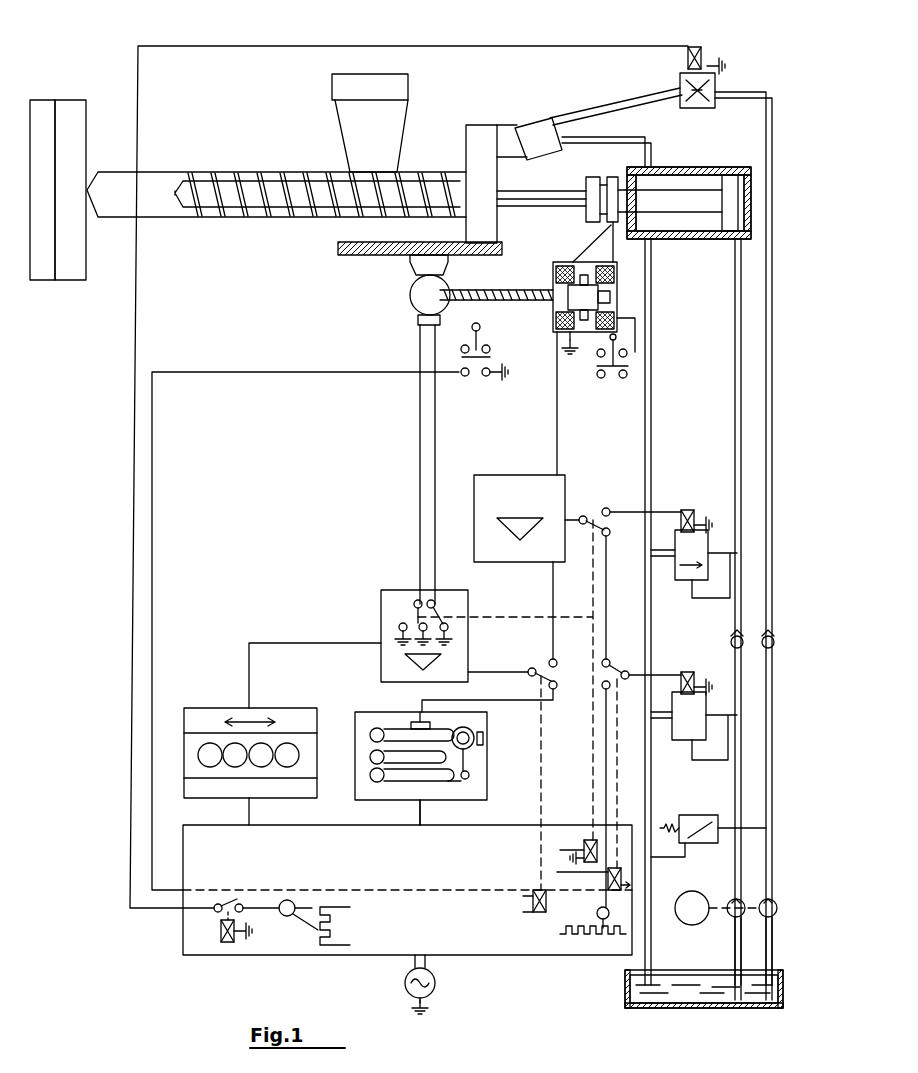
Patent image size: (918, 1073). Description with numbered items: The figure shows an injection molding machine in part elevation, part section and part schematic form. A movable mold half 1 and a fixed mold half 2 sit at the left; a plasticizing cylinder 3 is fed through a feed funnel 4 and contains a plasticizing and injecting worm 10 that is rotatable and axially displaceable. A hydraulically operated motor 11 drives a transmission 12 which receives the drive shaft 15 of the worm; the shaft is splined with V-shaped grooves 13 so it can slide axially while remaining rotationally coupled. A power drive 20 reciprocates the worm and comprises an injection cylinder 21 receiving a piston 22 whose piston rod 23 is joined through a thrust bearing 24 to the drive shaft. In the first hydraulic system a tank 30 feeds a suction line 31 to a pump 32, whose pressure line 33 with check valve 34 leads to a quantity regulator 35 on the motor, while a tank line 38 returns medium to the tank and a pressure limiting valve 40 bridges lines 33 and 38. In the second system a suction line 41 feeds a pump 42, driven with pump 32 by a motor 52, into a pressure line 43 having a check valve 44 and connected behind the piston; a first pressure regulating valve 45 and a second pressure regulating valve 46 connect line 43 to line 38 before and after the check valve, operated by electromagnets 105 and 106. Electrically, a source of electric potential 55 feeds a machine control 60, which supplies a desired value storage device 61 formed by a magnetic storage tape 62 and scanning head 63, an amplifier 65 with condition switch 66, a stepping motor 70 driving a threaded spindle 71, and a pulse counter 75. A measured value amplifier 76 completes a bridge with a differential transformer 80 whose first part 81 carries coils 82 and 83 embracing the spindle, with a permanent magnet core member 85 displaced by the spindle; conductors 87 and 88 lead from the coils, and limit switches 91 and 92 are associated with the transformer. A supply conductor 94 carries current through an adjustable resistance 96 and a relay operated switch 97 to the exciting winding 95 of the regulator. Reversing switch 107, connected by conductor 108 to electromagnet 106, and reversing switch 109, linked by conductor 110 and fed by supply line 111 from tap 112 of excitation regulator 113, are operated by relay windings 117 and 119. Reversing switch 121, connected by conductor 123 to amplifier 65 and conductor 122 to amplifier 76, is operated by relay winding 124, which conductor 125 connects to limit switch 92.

The movable mold half 1 is at (46, 100).
The fixed mold half 2 is at (78, 100).
The plasticizing cylinder 3 is at (160, 172).
The feed funnel 4 is at (332, 90).
The plasticizing and injecting worm 10 is at (248, 182).
The hydraulically operated motor 11 is at (536, 128).
The transmission 12 is at (472, 128).
The V-shaped grooves 13 is at (540, 191).
The drive shaft 15 is at (540, 206).
The power drive 20 is at (688, 210).
The injection cylinder 21 is at (684, 239).
The piston 22 is at (728, 231).
The piston rod 23 is at (700, 190).
The thrust bearing 24 is at (610, 176).
The tank 30 is at (624, 990).
The suction line 31 is at (764, 960).
The pump 32 is at (766, 898).
The pressure line 33 is at (766, 812).
The check valve 34 is at (762, 640).
The quantity regulator 35 is at (712, 105).
The tank line 38 is at (652, 385).
The pressure limiting valve 40 is at (689, 810).
The suction line 41 is at (732, 930).
The pump 42 is at (730, 898).
The pressure line 43 is at (735, 770).
The check valve 44 is at (731, 640).
The first electrohydraulic pressure regulating valve 45 is at (670, 738).
The second electrohydraulic pressure regulating valve 46 is at (674, 582).
The motor 52 is at (680, 896).
The source of electric potential 55 is at (446, 989).
The machine control 60 is at (370, 895).
The desired value storage device 61 is at (481, 803).
The magnetic storage tape 62 is at (474, 760).
The scanning head 63 is at (434, 753).
The amplifier 65 is at (358, 634).
The condition switch 66 is at (398, 600).
The stepping motor 70 is at (410, 295).
The threaded spindle 71 is at (522, 302).
The adding and subtracting pulse counter 75 is at (214, 694).
The measured value amplifier 76 is at (516, 464).
The differential transformer 80 is at (580, 307).
The first part 81 is at (583, 243).
The coil 82 is at (555, 272).
The coil 83 is at (614, 285).
The permanent magnet core member 85 is at (612, 292).
The conductor 87 is at (556, 408).
The conductor 88 is at (635, 434).
The limit switch 91 is at (613, 378).
The limit switch 92 is at (468, 378).
The supply conductor 94 is at (540, 46).
The exciting winding 95 is at (694, 46).
The adjustable resistance 96 is at (332, 922).
The relay operated switch 97 is at (217, 943).
The operating electromagnet 105 is at (700, 665).
The operating electromagnet 106 is at (702, 512).
The Rotation-Shot reversing switch 107 is at (604, 509).
The conductor 108 is at (660, 512).
The Shot/Rotation-Afterpressure reversing switch 109 is at (632, 658).
The conductor 110 is at (608, 588).
The supply line 111 is at (604, 740).
The tap 112 is at (604, 930).
The excitation regulator 113 is at (559, 943).
The relay winding 117 is at (588, 838).
The relay winding 119 is at (608, 880).
The Shot/Rotation-Afterpressure reversing switch 121 is at (540, 662).
The conductor 122 is at (553, 594).
The conductor 123 is at (522, 676).
The relay winding 124 is at (522, 911).
The conductor 125 is at (426, 890).